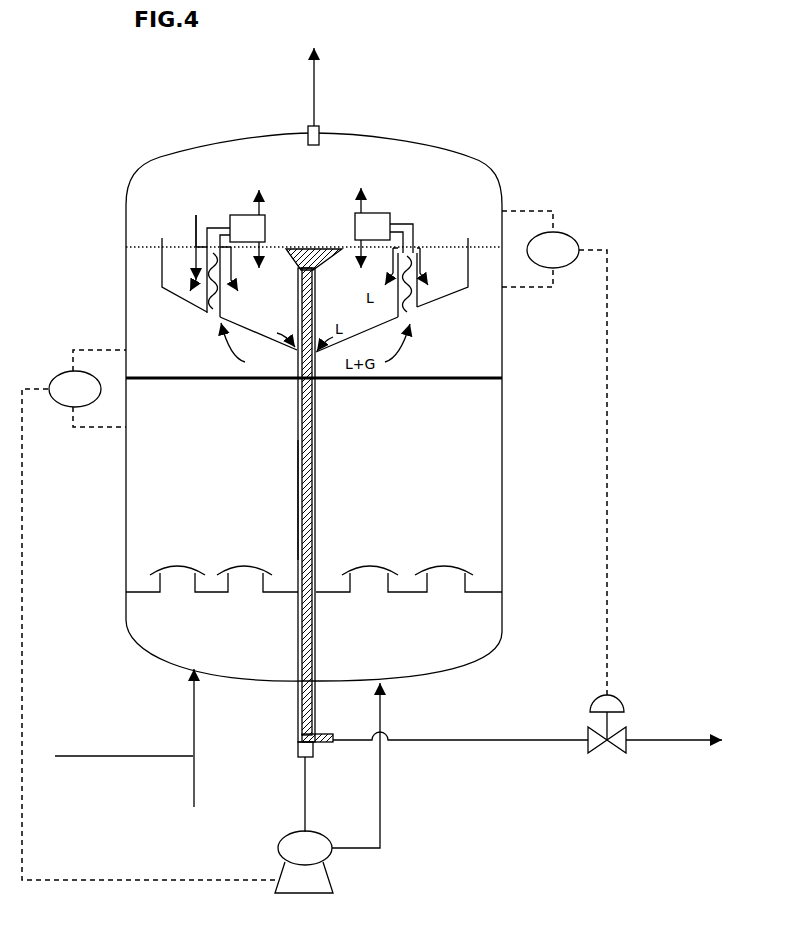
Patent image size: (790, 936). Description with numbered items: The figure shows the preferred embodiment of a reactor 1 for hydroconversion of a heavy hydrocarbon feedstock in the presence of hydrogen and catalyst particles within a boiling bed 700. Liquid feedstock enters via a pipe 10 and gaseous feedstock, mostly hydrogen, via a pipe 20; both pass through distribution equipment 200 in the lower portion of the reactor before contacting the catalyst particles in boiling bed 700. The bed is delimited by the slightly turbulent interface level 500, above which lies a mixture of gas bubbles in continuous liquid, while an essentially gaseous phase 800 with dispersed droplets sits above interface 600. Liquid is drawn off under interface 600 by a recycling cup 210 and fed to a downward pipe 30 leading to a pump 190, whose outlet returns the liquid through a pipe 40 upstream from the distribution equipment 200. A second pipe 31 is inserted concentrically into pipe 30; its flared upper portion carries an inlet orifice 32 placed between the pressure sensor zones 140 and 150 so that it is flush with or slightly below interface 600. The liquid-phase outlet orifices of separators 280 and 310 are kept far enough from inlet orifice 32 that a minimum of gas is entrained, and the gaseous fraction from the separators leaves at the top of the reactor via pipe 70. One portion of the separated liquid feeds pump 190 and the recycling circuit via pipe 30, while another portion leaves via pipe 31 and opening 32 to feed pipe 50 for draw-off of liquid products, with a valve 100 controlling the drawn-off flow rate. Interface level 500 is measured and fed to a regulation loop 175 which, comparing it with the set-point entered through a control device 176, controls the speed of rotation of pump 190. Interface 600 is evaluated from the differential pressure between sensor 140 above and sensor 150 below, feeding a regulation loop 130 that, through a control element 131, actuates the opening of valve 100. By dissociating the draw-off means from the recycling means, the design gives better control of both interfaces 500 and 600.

The reactor 1 is at (150, 160).
The pipe 10 is at (147, 757).
The pipe 20 is at (197, 765).
The downward pipe 30 is at (316, 460).
The second pipe 31 is at (313, 527).
The inlet orifice 32 is at (313, 247).
The pipe 40 is at (381, 725).
The pipe 50 is at (478, 740).
The pipe 70 is at (315, 90).
The valve 100 is at (612, 724).
The regulation loop 130 is at (607, 312).
The control element 131 is at (540, 260).
The pressure sensor 140 is at (548, 211).
The pressure sensor 150 is at (543, 289).
The regulation loop 175 is at (24, 569).
The control device 176 is at (62, 399).
The pump 190 is at (323, 862).
The equipment 200 is at (226, 594).
The piece of equipment 210 is at (207, 308).
The separator 280 is at (197, 236).
The separator 310 is at (310, 223).
The interface level 500 is at (228, 382).
The interface 600 is at (152, 246).
The boiling bed 700 is at (404, 478).
The gas phase zone 800 is at (460, 195).